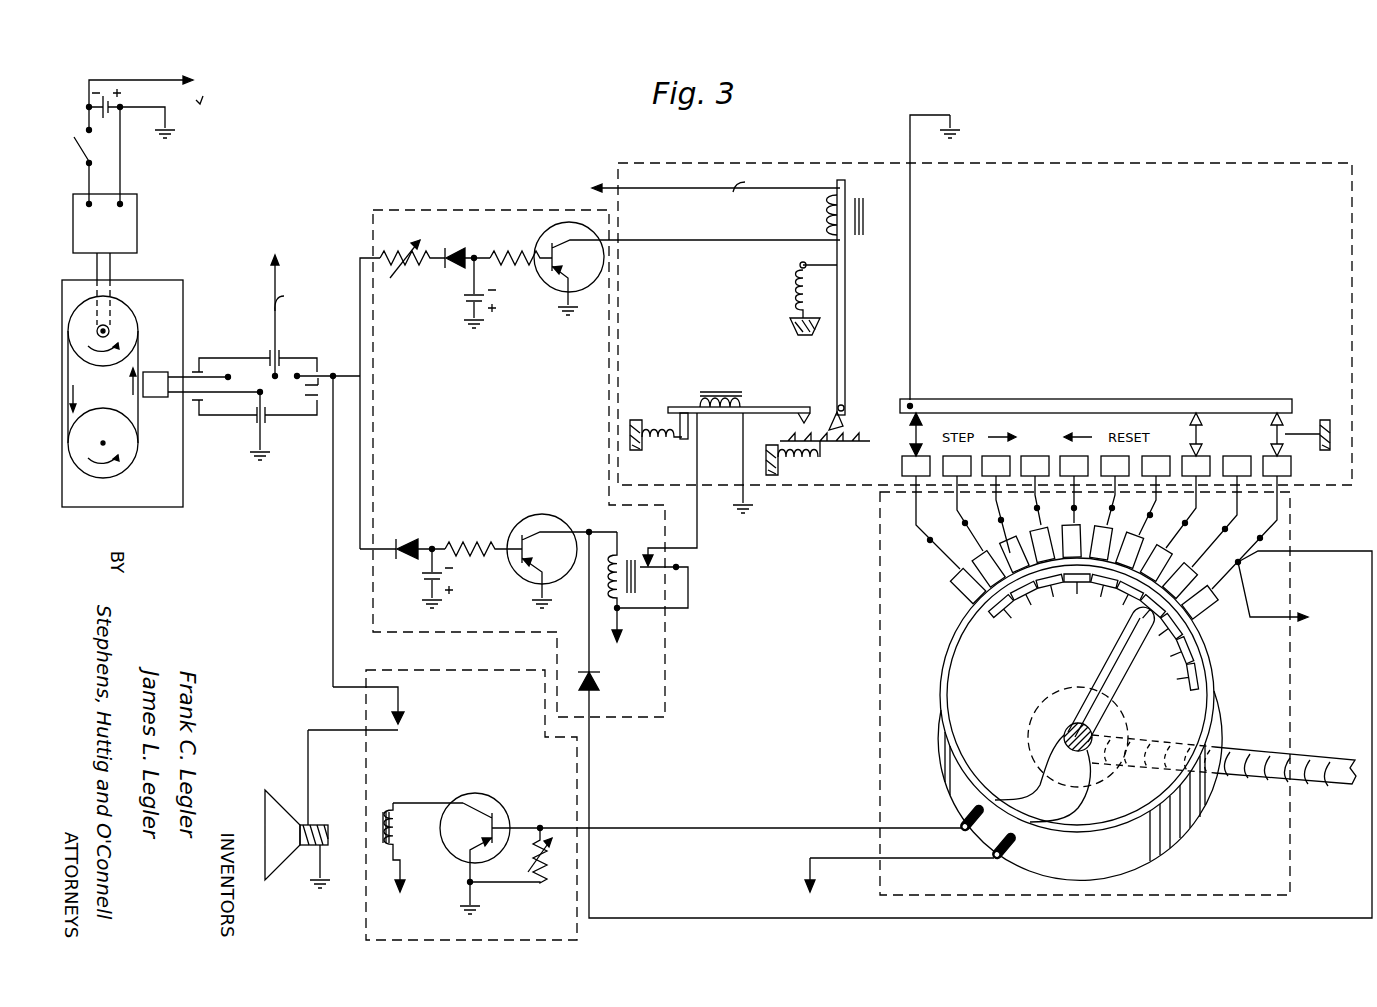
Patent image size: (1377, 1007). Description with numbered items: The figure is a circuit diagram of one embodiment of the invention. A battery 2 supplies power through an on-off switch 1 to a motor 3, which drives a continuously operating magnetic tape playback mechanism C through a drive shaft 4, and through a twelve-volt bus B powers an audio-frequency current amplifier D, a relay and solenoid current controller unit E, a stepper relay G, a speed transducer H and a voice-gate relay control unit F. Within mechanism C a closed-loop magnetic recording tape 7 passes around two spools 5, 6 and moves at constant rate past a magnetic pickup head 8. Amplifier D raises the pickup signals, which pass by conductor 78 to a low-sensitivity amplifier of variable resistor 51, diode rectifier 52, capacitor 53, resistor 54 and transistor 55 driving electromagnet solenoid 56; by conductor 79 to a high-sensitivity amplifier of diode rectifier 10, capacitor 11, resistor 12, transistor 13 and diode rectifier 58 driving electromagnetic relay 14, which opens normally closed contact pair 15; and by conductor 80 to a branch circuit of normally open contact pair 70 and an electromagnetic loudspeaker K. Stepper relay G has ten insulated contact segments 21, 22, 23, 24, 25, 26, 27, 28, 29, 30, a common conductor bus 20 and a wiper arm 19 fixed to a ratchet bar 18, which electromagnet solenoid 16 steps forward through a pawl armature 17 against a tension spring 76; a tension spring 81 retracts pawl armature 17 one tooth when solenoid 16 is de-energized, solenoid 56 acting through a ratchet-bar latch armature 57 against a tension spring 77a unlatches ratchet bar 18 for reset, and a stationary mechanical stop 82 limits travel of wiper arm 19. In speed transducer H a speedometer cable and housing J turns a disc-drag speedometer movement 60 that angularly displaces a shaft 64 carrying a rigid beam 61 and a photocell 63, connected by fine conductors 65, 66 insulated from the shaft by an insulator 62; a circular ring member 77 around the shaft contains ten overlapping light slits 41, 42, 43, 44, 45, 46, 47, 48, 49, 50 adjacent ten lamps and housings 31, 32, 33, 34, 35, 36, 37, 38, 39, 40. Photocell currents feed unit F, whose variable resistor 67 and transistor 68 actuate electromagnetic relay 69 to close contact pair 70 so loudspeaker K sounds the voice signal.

The on-off switch 1 is at (76, 144).
The battery 2 is at (108, 113).
The motor 3 is at (137, 215).
The drive shaft 4 is at (112, 270).
The spool 5 is at (125, 320).
The spool 6 is at (125, 465).
The closed-loop magnetic recording tape 7 is at (138, 360).
The magnetic pickup head 8 is at (150, 397).
The diode rectifier 10 is at (400, 538).
The capacitor 11 is at (422, 580).
The resistor 12 is at (493, 530).
The transistor 13 is at (512, 580).
The electromagnetic relay 14 is at (622, 548).
The normally closed relay contact pair 15 is at (676, 560).
The electromagnet solenoid 16 is at (712, 415).
The pawl armature 17 is at (795, 405).
The ratchet bar 18 is at (838, 450).
The wiper arm 19 is at (925, 432).
The common metallic conductor bus 20 is at (1083, 383).
The contact segment 21 is at (900, 463).
The contact segment 22 is at (942, 457).
The contact segment 23 is at (982, 457).
The contact segment 24 is at (1021, 457).
The contact segment 25 is at (1060, 457).
The contact segment 26 is at (1101, 457).
The contact segment 27 is at (1142, 457).
The contact segment 28 is at (1195, 457).
The contact segment 29 is at (1232, 457).
The contact segment 30 is at (1290, 470).
The lamp and lamp housing 31 is at (945, 590).
The lamp and lamp housing 32 is at (981, 539).
The lamp and lamp housing 33 is at (1008, 531).
The lamp and lamp housing 34 is at (1037, 526).
The lamp and lamp housing 35 is at (1065, 523).
The lamp and lamp housing 36 is at (1100, 525).
The lamp and lamp housing 37 is at (1136, 529).
The lamp and lamp housing 38 is at (1168, 535).
The lamp and lamp housing 39 is at (1174, 584).
The lamp and lamp housing 40 is at (1245, 555).
The light slit 41 is at (994, 623).
The light slit 42 is at (1023, 611).
The light slit 43 is at (1043, 594).
The light slit 44 is at (1063, 598).
The light slit 45 is at (1086, 592).
The light slit 46 is at (1111, 600).
The light slit 47 is at (1134, 594).
The light slit 48 is at (1155, 615).
The light slit 49 is at (1170, 627).
The light slit 50 is at (1185, 648).
The variable resistor 51 is at (408, 238).
The diode rectifier 52 is at (456, 248).
The capacitor 53 is at (455, 312).
The resistor 54 is at (530, 240).
The transistor 55 is at (540, 290).
The electromagnet solenoid 56 is at (855, 185).
The ratchet-bar latch armature 57 is at (845, 305).
The diode rectifier 58 is at (600, 688).
The disc-drag speedometer movement 60 is at (1122, 770).
The rigid beam 61 is at (1110, 665).
The insulator 62 is at (1060, 742).
The photocell 63 is at (1142, 661).
The speedometer movement shaft 64 is at (1090, 735).
The conductor 65 is at (1022, 795).
The conductor 66 is at (1066, 812).
The variable resistor 67 is at (528, 852).
The transistor 68 is at (500, 803).
The electromagnetic relay 69 is at (393, 803).
The normally open relay contact pair 70 is at (405, 718).
The tension spring 76 is at (800, 465).
The circular ring member 77 is at (1185, 815).
The tension spring 77a is at (796, 290).
The conductor 78 is at (360, 312).
The conductor 79 is at (360, 443).
The conductor 80 is at (333, 500).
The tension spring 81 is at (660, 420).
The stationary mechanical stop 82 is at (1305, 430).
The bus B is at (726, 494).
The magnetic tape playback mechanism C is at (183, 330).
The audio-frequency current amplifier D is at (258, 357).
The relay and solenoid current controller unit E is at (478, 210).
The voice-gate relay control unit F is at (364, 900).
The stepper relay G is at (666, 164).
The speed transducer H is at (880, 848).
The speedometer cable and housing J is at (1345, 726).
The electromagnetic loudspeaker K is at (275, 880).